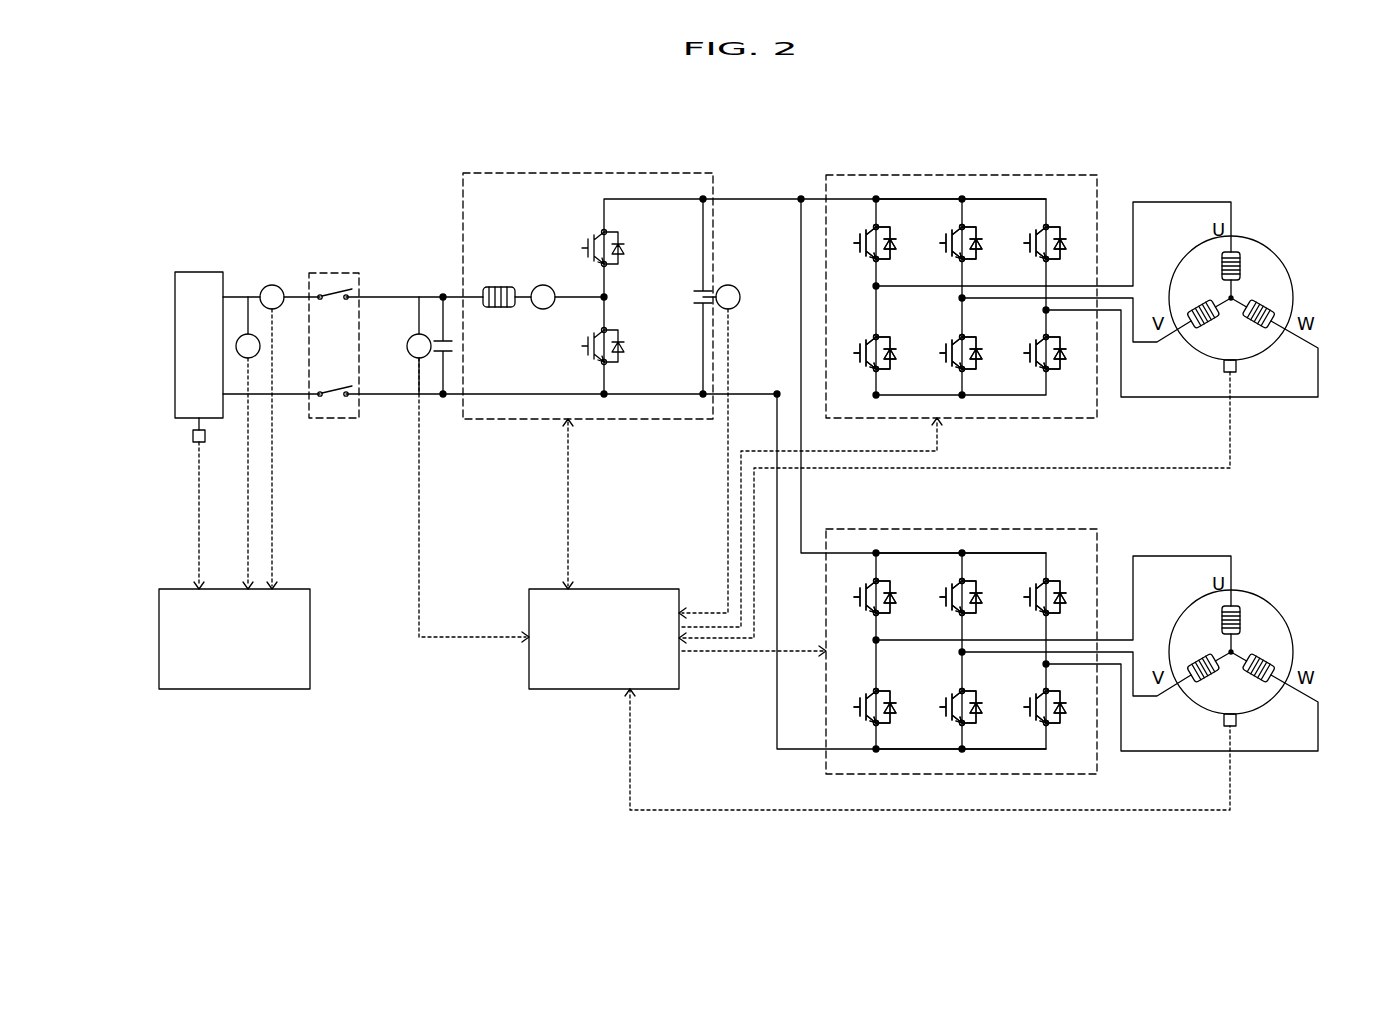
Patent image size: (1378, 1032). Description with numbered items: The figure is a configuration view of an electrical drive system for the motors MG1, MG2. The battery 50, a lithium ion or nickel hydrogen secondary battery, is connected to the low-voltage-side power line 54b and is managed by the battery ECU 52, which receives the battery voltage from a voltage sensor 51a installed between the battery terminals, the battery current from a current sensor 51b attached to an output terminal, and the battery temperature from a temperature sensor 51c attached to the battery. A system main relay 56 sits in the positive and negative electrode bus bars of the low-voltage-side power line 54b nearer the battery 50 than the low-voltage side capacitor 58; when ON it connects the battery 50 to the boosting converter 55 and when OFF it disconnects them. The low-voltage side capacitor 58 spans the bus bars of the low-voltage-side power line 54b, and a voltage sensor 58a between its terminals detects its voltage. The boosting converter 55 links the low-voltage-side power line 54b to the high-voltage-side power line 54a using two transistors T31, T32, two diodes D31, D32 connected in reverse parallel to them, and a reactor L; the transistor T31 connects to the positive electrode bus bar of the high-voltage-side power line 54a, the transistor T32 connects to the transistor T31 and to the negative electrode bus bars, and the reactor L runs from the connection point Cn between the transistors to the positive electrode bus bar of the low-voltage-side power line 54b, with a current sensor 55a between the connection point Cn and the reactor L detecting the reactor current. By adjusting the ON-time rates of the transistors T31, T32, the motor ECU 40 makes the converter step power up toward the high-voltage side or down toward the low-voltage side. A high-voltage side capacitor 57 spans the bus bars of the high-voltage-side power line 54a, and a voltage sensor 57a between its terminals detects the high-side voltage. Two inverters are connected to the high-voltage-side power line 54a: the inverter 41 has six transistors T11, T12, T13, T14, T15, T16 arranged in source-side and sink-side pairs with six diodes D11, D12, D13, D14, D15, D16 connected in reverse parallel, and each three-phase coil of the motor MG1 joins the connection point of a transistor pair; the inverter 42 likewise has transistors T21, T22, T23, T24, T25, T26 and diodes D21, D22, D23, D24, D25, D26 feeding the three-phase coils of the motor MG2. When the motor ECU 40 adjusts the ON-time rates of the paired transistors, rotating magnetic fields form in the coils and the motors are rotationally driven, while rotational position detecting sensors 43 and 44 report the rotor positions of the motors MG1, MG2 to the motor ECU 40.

The motor ECU 40 is at (604, 589).
The inverter 41 is at (1008, 175).
The inverter 42 is at (1008, 529).
The rotational position detecting sensor 43 is at (1238, 366).
The rotational position detecting sensor 44 is at (1238, 720).
The battery 50 is at (199, 270).
The voltage sensor 51a is at (247, 333).
The current sensor 51b is at (272, 284).
The temperature sensor 51c is at (192, 434).
The battery ECU 52 is at (285, 589).
The high-voltage-side power line 54a is at (788, 394).
The low-voltage-side power line 54b is at (400, 394).
The boosting converter 55 is at (573, 173).
The current sensor 55a is at (543, 285).
The system main relay 56 is at (335, 266).
The high-voltage side capacitor 57 is at (698, 288).
The voltage sensor 57a is at (723, 284).
The low-voltage side capacitor 58 is at (441, 338).
The voltage sensor 58a is at (418, 333).
The reactor L is at (494, 285).
The connection point Cn is at (612, 297).
The transistor T11 is at (858, 241).
The transistor T12 is at (944, 241).
The transistor T13 is at (1028, 241).
The transistor T14 is at (858, 351).
The transistor T15 is at (944, 351).
The transistor T16 is at (1028, 351).
The transistor T21 is at (855, 587).
The transistor T22 is at (941, 587).
The transistor T23 is at (1025, 587).
The transistor T24 is at (855, 697).
The transistor T25 is at (941, 697).
The transistor T26 is at (1025, 697).
The transistor T31 is at (586, 244).
The transistor T32 is at (586, 342).
The diode D11 is at (890, 257).
The diode D12 is at (976, 257).
The diode D13 is at (1060, 257).
The diode D14 is at (890, 367).
The diode D15 is at (976, 367).
The diode D16 is at (1060, 367).
The diode D21 is at (896, 609).
The diode D22 is at (982, 609).
The diode D23 is at (1066, 609).
The diode D24 is at (896, 719).
The diode D25 is at (982, 719).
The diode D26 is at (1074, 719).
The diode D31 is at (618, 263).
The diode D32 is at (618, 362).
The motor MG1 is at (1262, 242).
The motor MG2 is at (1262, 596).